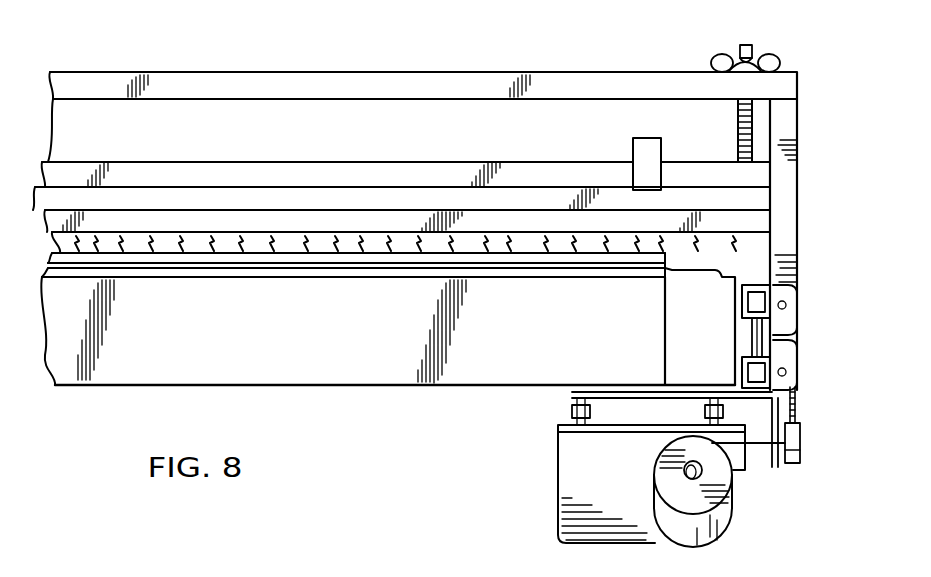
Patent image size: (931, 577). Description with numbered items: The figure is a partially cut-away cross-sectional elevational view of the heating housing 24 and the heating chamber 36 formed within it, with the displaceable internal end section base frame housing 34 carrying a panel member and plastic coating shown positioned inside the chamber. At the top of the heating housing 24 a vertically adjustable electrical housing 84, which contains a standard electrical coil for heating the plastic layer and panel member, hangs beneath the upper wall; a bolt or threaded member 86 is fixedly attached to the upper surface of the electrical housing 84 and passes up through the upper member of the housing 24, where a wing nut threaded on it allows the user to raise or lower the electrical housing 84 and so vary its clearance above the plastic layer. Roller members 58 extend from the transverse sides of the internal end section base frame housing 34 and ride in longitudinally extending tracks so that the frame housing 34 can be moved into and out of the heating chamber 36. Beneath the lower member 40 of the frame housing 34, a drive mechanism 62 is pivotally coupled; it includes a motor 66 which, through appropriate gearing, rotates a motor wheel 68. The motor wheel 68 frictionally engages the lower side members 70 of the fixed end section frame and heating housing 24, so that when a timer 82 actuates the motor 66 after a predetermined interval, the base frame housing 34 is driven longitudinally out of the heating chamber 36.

The heating housing 24 is at (480, 72).
The heating chamber 36 is at (392, 115).
The vertically adjustable electrical housing 84 is at (600, 175).
The bolt or threaded member 86 is at (738, 50).
The internal end section base frame housing 34 is at (486, 378).
The lower member 40 is at (388, 388).
The roller members 58 is at (762, 332).
The drive mechanism 62 is at (741, 549).
The lower side members 70 is at (797, 400).
The motor wheel 68 is at (801, 447).
The timer 82 is at (568, 480).
The motor 66 is at (732, 512).